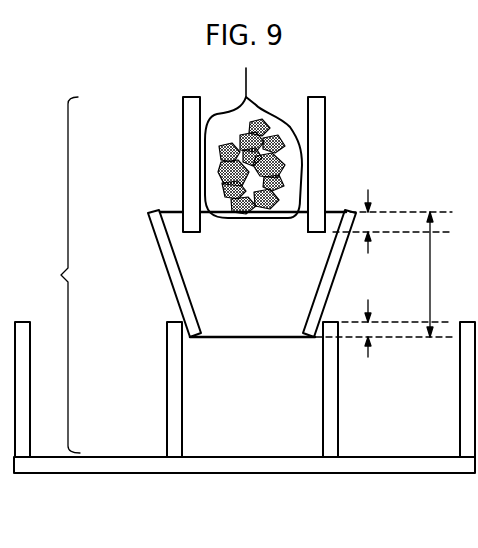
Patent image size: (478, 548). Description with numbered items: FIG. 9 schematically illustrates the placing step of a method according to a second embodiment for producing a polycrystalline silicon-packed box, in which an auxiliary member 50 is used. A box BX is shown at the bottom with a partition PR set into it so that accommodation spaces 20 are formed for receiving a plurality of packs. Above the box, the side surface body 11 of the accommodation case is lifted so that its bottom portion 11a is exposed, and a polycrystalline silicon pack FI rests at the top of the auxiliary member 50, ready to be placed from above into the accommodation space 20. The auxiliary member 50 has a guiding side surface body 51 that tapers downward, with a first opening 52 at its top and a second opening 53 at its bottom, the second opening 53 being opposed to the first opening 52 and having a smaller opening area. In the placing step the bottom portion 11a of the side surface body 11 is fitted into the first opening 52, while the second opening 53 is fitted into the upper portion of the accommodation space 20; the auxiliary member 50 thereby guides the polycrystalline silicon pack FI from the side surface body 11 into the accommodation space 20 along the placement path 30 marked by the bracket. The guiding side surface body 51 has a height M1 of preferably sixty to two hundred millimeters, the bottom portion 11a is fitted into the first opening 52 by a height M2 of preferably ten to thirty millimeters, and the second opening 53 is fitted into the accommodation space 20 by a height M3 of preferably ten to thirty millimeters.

The side surface body 11 is at (289, 164).
The bottom portion of the side surface body 11a is at (318, 227).
The accommodation space 20 is at (244, 428).
The placement path 30 is at (55, 275).
The auxiliary member 50 is at (219, 271).
The guiding side surface body 51 is at (174, 287).
The first opening 52 is at (163, 210).
The second opening 53 is at (217, 340).
The polycrystalline silicon pack FI is at (258, 104).
The partition PR is at (167, 422).
The box BX is at (432, 474).
The height of the guiding side surface body M1 is at (446, 274).
The height of fitting of the bottom portion into the first opening M2 is at (392, 221).
The height of fitting of the second opening into the accommodation space M3 is at (384, 328).